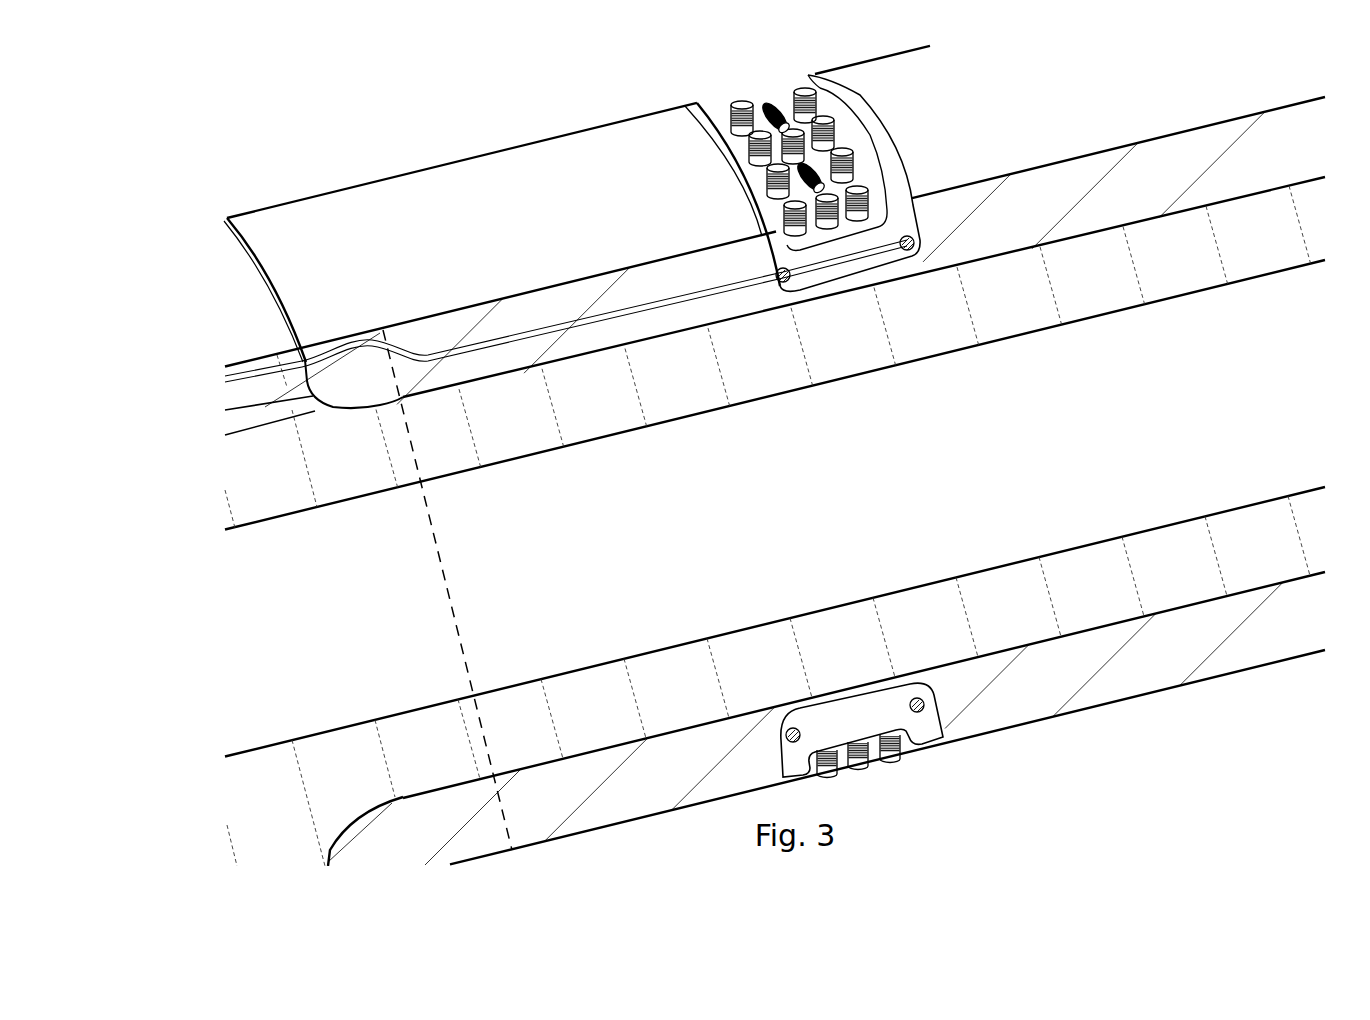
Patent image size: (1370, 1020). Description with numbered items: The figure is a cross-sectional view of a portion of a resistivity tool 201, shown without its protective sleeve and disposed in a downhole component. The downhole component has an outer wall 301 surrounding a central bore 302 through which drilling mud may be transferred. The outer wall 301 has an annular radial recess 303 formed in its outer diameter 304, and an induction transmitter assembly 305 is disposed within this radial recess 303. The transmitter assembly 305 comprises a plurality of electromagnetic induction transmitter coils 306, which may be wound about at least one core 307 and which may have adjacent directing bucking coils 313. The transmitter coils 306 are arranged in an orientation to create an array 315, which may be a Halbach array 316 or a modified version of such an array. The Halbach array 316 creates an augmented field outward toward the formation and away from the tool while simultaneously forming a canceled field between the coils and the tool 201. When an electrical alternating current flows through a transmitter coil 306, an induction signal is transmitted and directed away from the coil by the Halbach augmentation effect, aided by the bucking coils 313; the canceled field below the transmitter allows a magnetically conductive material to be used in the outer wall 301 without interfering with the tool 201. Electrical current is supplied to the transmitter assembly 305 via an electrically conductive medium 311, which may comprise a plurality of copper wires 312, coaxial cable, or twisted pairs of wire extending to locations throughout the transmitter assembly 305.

The resistivity tool 201 is at (372, 182).
The outer wall 301 is at (313, 720).
The central bore 302 is at (1193, 426).
The annular radial recess 303 is at (733, 163).
The outer diameter 304 is at (456, 618).
The induction transmitter assembly 305 is at (723, 102).
The electromagnetic induction transmitter coil 306 is at (820, 77).
The core 307 is at (820, 207).
The electrically conductive medium 311 is at (308, 362).
The copper wires 312 is at (522, 340).
The bucking coil 313 is at (830, 773).
The array 315 is at (855, 733).
The Halbach array 316 is at (847, 236).